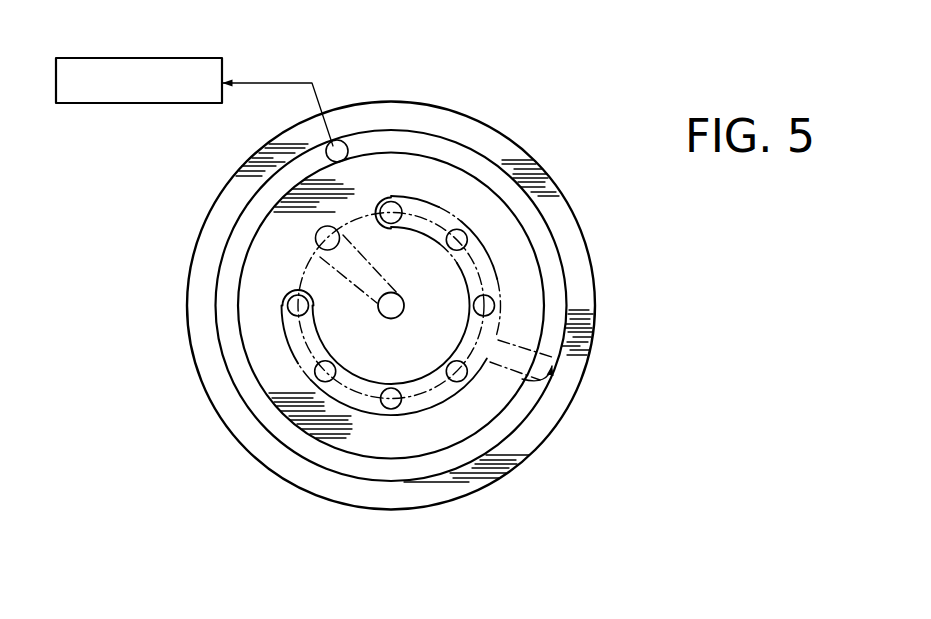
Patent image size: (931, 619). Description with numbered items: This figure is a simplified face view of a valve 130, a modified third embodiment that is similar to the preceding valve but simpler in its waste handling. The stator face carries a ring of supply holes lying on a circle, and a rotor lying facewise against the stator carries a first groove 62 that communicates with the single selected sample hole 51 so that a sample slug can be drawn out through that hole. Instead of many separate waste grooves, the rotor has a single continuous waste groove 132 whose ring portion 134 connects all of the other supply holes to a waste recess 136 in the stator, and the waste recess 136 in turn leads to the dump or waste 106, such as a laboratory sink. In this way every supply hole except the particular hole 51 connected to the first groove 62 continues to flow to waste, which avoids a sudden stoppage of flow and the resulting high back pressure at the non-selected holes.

The valve 130 is at (603, 310).
The waste recess 136 is at (474, 165).
The ring portion 134 is at (478, 263).
The waste groove 132 is at (509, 371).
The sample hole 51 is at (316, 233).
The first groove 62 is at (322, 252).
The waste 106 is at (175, 58).